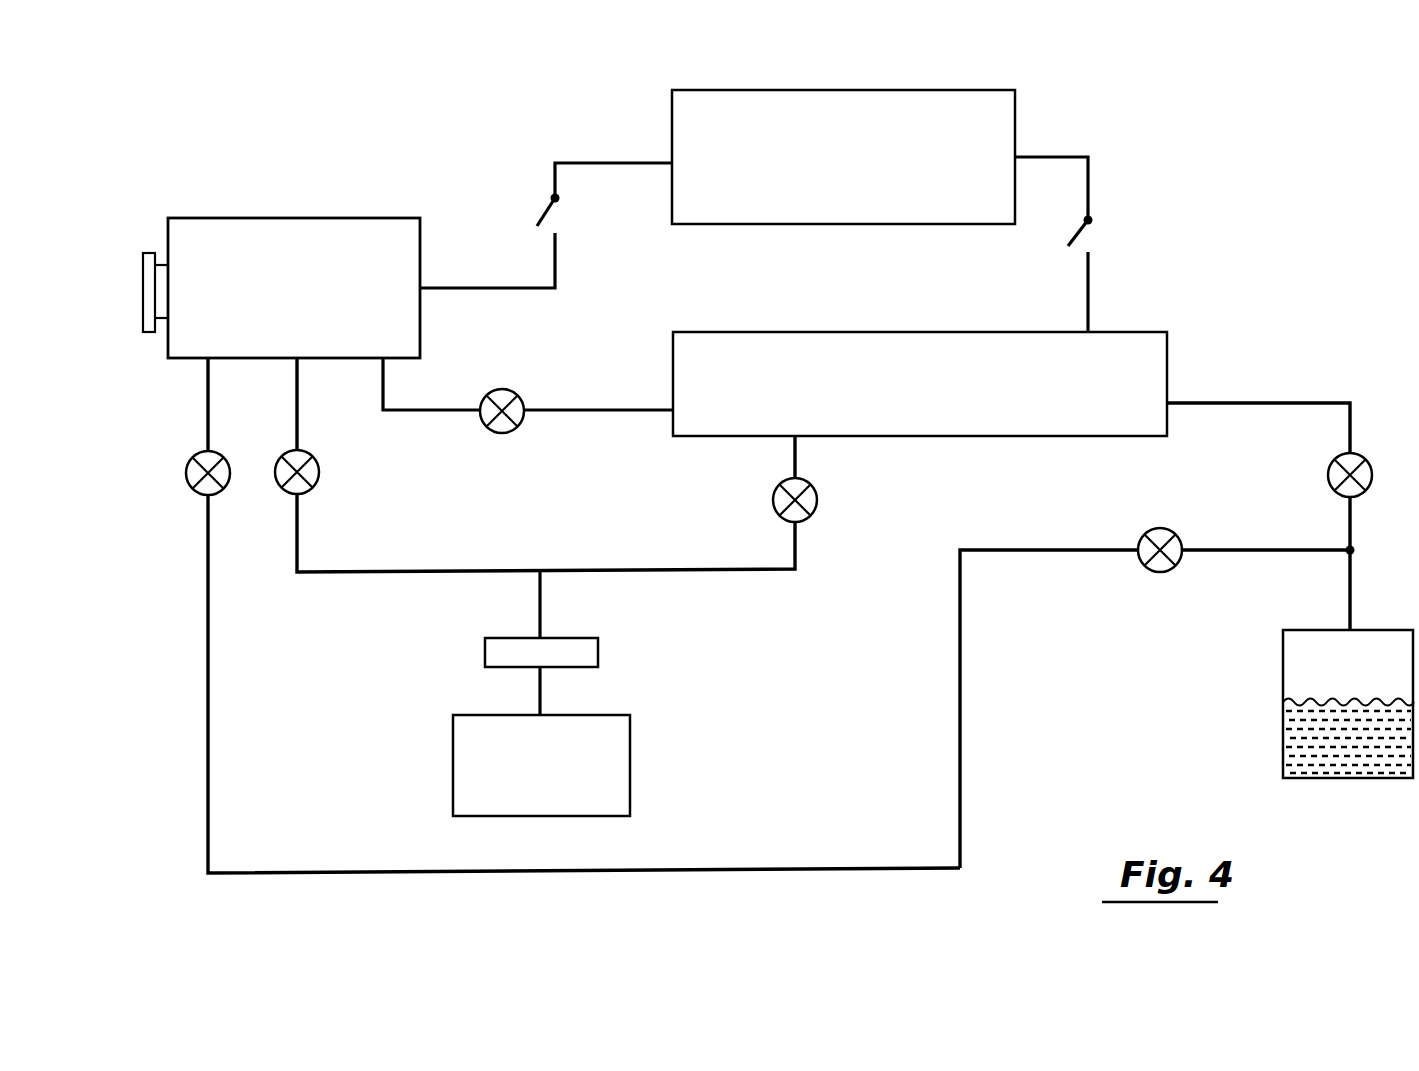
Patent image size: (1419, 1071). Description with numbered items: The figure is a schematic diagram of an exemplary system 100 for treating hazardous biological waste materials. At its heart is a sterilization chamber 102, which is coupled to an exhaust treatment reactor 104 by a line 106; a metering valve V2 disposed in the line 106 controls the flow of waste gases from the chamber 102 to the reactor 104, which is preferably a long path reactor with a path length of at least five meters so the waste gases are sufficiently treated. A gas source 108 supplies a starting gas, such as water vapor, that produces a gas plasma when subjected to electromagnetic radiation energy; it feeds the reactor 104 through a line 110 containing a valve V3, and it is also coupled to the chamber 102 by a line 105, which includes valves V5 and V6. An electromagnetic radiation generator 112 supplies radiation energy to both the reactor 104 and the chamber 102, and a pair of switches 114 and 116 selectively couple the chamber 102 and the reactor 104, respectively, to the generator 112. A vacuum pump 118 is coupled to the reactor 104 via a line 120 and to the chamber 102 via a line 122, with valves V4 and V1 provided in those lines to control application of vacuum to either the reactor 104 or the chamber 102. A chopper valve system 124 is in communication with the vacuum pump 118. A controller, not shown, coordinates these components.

The system 100 is at (1170, 150).
The sterilization chamber 102 is at (285, 218).
The exhaust treatment reactor 104 is at (898, 332).
The line 105 is at (960, 775).
The line 106 is at (455, 410).
The gas source 108 is at (1283, 662).
The line 110 is at (1290, 403).
The electromagnetic radiation generator 112 is at (672, 137).
The switch 114 is at (550, 198).
The switch 116 is at (1093, 221).
The vacuum pump 118 is at (630, 768).
The line 120 is at (725, 570).
The line 122 is at (388, 872).
The chopper valve system 124 is at (598, 650).
The valve V1 is at (320, 476).
The metering valve V2 is at (498, 434).
The valve V3 is at (1327, 474).
The valve V4 is at (817, 505).
The valve V5 is at (1148, 572).
The valve V6 is at (225, 490).